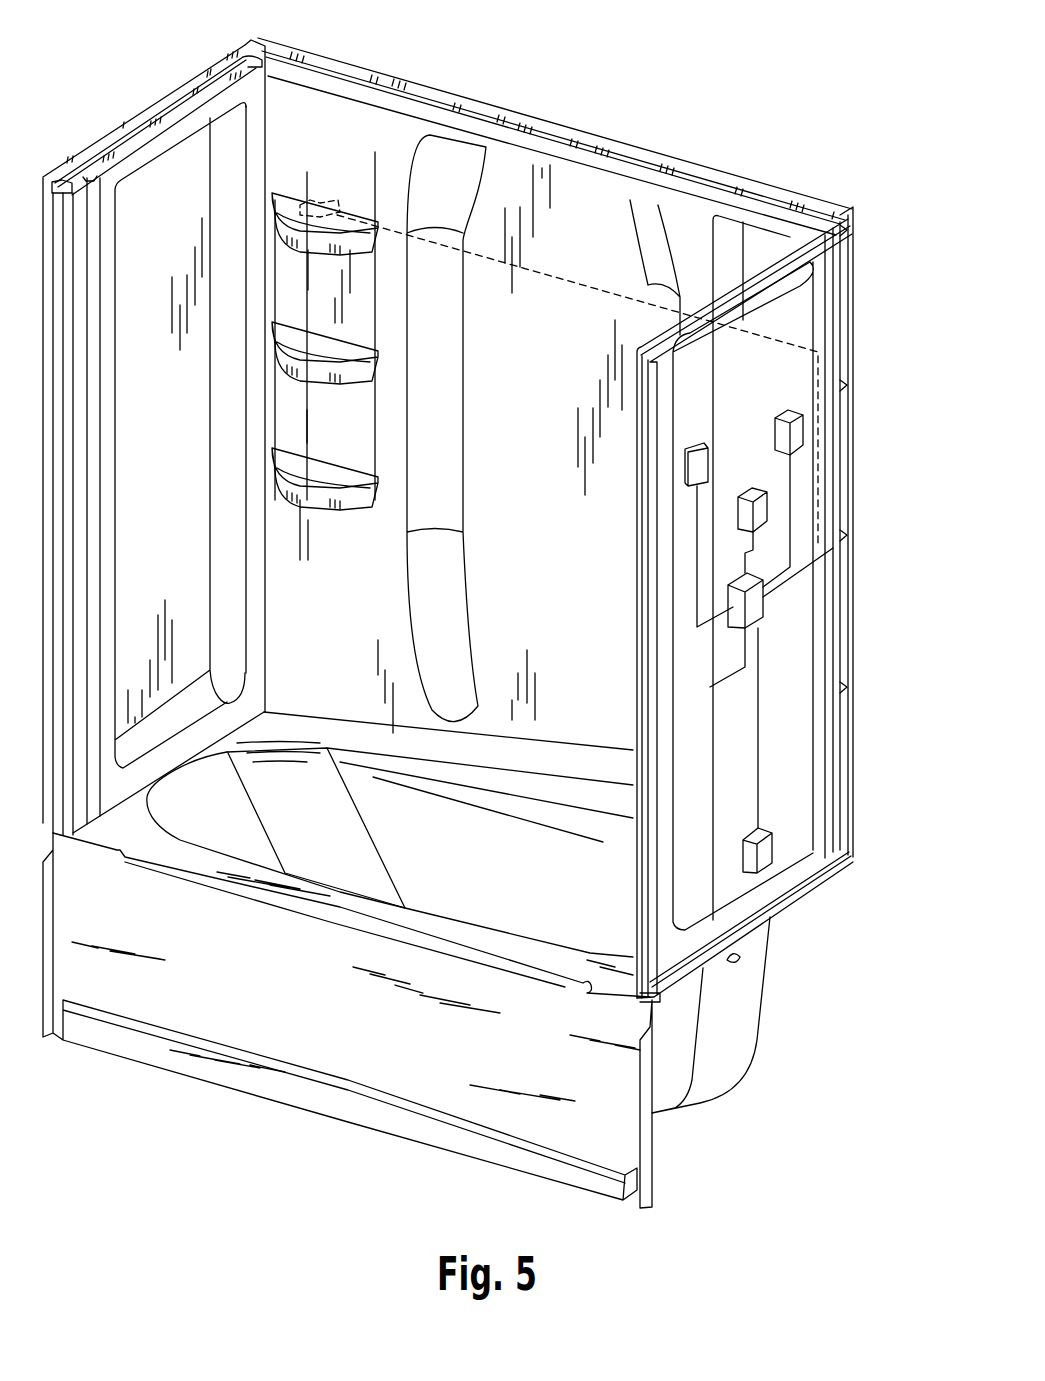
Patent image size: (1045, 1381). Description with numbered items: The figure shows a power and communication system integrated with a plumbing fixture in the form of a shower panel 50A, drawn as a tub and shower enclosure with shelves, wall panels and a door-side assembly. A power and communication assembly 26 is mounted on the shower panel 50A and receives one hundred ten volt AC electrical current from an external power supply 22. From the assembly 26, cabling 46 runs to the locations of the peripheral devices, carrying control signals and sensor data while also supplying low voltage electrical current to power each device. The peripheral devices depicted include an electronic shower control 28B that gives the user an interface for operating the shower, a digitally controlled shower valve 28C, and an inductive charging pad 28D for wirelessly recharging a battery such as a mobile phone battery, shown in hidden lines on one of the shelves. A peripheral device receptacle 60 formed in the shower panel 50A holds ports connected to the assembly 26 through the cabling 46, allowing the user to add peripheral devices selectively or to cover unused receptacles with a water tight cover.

The shower panel 50A is at (842, 186).
The inductive charging pad 28D is at (320, 200).
The peripheral device receptacle 60 is at (700, 447).
The electronic shower control 28B is at (760, 508).
The cabling 46 is at (697, 533).
The power and communication assembly 26 is at (755, 603).
The external power supply 22 is at (693, 693).
The digitally controlled shower valve 28C is at (767, 858).